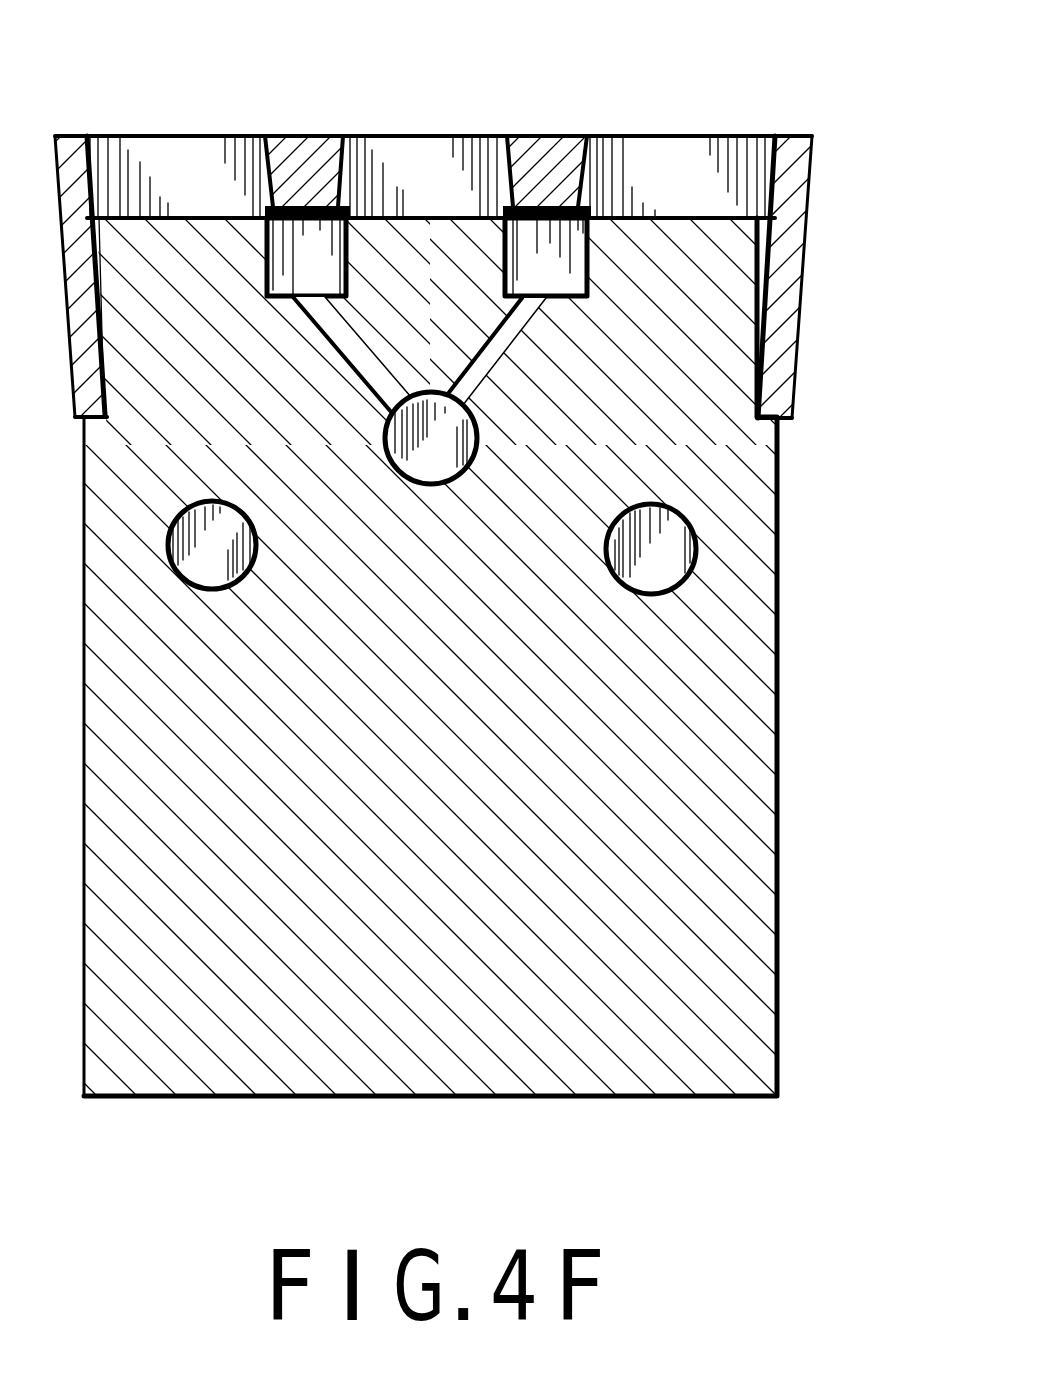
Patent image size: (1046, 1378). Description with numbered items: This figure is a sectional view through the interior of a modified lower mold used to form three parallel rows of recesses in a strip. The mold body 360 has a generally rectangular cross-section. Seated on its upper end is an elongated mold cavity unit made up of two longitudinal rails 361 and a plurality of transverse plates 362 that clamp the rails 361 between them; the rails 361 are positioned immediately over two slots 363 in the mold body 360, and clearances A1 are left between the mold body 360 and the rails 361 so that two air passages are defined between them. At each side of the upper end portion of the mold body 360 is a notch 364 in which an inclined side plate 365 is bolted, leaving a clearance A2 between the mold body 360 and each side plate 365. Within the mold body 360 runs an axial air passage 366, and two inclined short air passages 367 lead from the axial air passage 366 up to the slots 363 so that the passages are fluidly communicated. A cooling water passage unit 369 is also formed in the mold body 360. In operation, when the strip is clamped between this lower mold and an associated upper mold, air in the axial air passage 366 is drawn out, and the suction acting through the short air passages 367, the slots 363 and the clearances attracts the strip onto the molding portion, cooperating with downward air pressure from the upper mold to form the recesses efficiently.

The mold body 360 is at (778, 805).
The longitudinal rails 361 is at (548, 134).
The transverse plates 362 is at (710, 148).
The slots 363 is at (571, 252).
The notches 364 is at (763, 247).
The inclined side plates 365 is at (762, 290).
The axial air passage 366 is at (453, 433).
The inclined short air passages 367 is at (350, 333).
The cooling water passage unit 369 is at (670, 555).
The clearances A1 is at (357, 136).
The clearances A2 is at (760, 313).